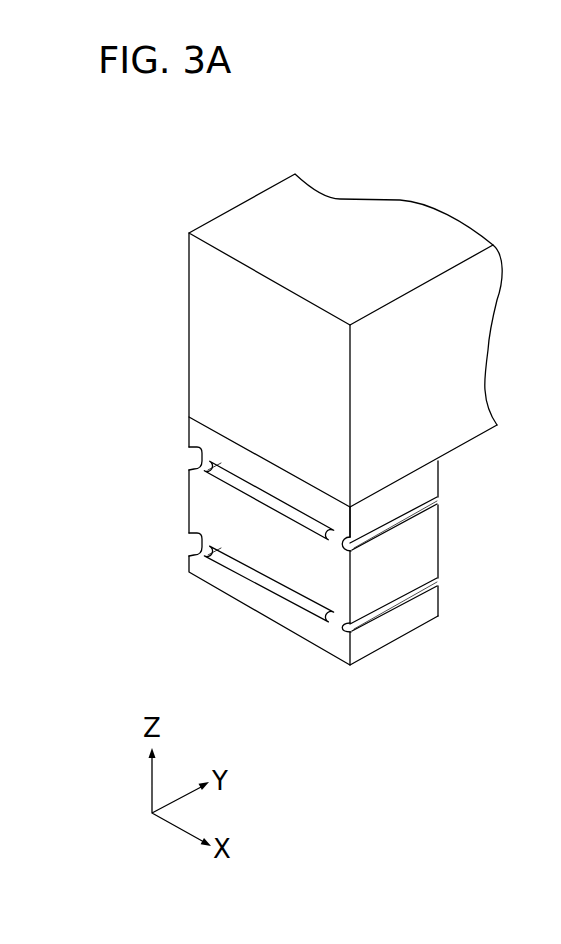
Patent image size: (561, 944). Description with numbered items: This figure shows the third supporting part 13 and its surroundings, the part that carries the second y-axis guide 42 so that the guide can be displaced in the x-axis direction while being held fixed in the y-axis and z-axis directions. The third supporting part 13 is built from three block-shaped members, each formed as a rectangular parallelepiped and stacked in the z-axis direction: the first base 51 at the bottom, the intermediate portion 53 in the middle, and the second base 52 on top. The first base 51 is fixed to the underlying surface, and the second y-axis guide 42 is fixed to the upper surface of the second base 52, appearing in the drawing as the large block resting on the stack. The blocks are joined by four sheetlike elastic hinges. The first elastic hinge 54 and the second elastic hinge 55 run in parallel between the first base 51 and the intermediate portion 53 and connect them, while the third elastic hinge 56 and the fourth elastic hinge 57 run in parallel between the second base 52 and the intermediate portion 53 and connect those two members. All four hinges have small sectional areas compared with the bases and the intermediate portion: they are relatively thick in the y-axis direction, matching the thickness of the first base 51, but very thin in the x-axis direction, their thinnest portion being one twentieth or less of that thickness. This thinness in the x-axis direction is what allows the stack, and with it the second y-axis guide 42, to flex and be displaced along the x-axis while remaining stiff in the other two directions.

The second y-axis guide 42 is at (261, 208).
The third supporting part 13 is at (302, 550).
The first base 51 is at (434, 606).
The second base 52 is at (434, 478).
The intermediate portion 53 is at (434, 540).
The first elastic hinge 54 is at (337, 623).
The second elastic hinge 55 is at (198, 548).
The third elastic hinge 56 is at (338, 541).
The fourth elastic hinge 57 is at (198, 462).